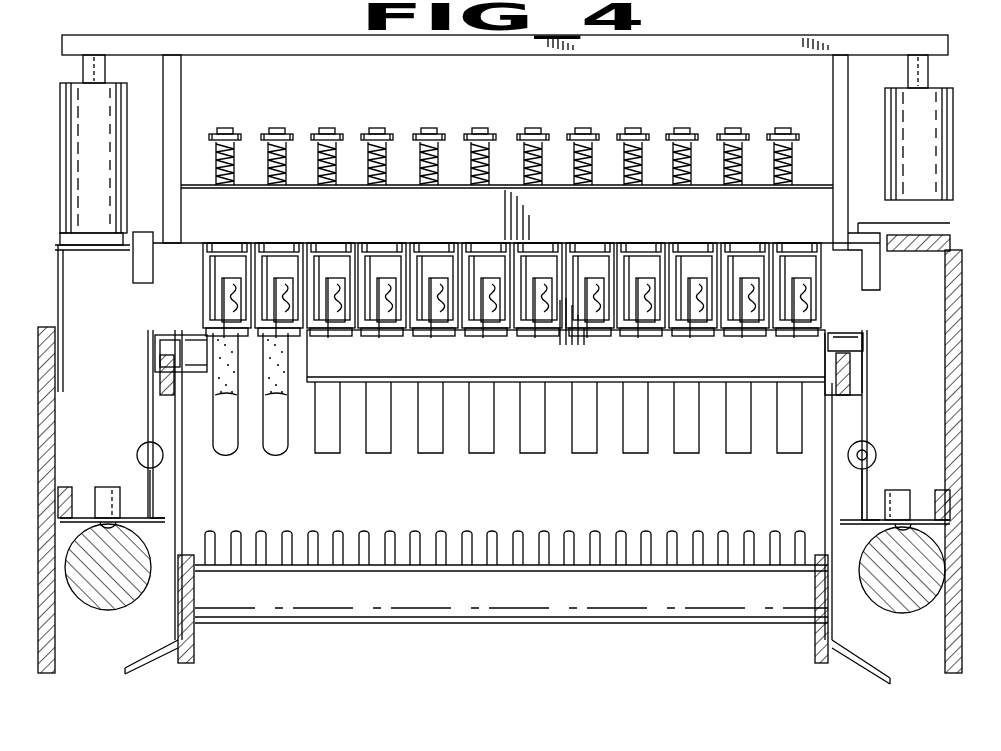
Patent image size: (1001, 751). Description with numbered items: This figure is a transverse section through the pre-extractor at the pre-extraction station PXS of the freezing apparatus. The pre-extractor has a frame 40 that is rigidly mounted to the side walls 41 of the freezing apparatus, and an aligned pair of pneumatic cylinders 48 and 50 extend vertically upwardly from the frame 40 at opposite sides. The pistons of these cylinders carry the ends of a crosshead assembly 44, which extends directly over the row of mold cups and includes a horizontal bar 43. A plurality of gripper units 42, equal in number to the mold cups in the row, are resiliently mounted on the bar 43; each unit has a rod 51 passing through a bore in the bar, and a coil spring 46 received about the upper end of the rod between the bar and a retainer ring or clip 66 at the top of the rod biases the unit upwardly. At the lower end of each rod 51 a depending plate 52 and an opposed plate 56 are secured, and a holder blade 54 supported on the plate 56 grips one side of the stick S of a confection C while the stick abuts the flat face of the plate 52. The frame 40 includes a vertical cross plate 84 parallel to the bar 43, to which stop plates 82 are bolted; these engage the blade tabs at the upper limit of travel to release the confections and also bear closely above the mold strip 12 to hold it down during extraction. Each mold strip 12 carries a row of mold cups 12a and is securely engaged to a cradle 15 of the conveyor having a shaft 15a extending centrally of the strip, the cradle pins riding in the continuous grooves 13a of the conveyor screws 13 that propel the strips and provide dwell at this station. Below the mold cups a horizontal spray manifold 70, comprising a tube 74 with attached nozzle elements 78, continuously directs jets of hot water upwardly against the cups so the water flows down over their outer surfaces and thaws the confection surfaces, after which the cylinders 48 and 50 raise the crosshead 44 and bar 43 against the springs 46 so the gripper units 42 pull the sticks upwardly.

The pre-extraction station PXS is at (316, 33).
The crosshead assembly 44 is at (722, 44).
The coil spring 46 is at (254, 152).
The rod 51 is at (278, 130).
The retainer ring or clip 66 is at (465, 130).
The horizontal bar 43 is at (462, 218).
The gripper unit 42 is at (312, 242).
The plate 56 is at (393, 243).
The stop plate 82 is at (500, 243).
The pneumatic cylinder 48 is at (92, 227).
The pneumatic cylinder 50 is at (910, 195).
The vertical cross plate 84 is at (843, 280).
The depending plate 52 is at (215, 294).
The stick S is at (220, 302).
The shaft 15a is at (198, 337).
The frame 40 is at (62, 338).
The side walls 41 is at (55, 404).
The cradle 15 is at (146, 432).
The holder blade 54 is at (458, 327).
The confection C is at (276, 347).
The mold strip 12 is at (807, 370).
The mold cup 12a is at (230, 455).
The groove 13a is at (115, 537).
The conveyor screw 13 is at (125, 608).
The nozzle element 78 is at (395, 534).
The spray manifold 70 is at (300, 622).
The tube 74 is at (600, 624).